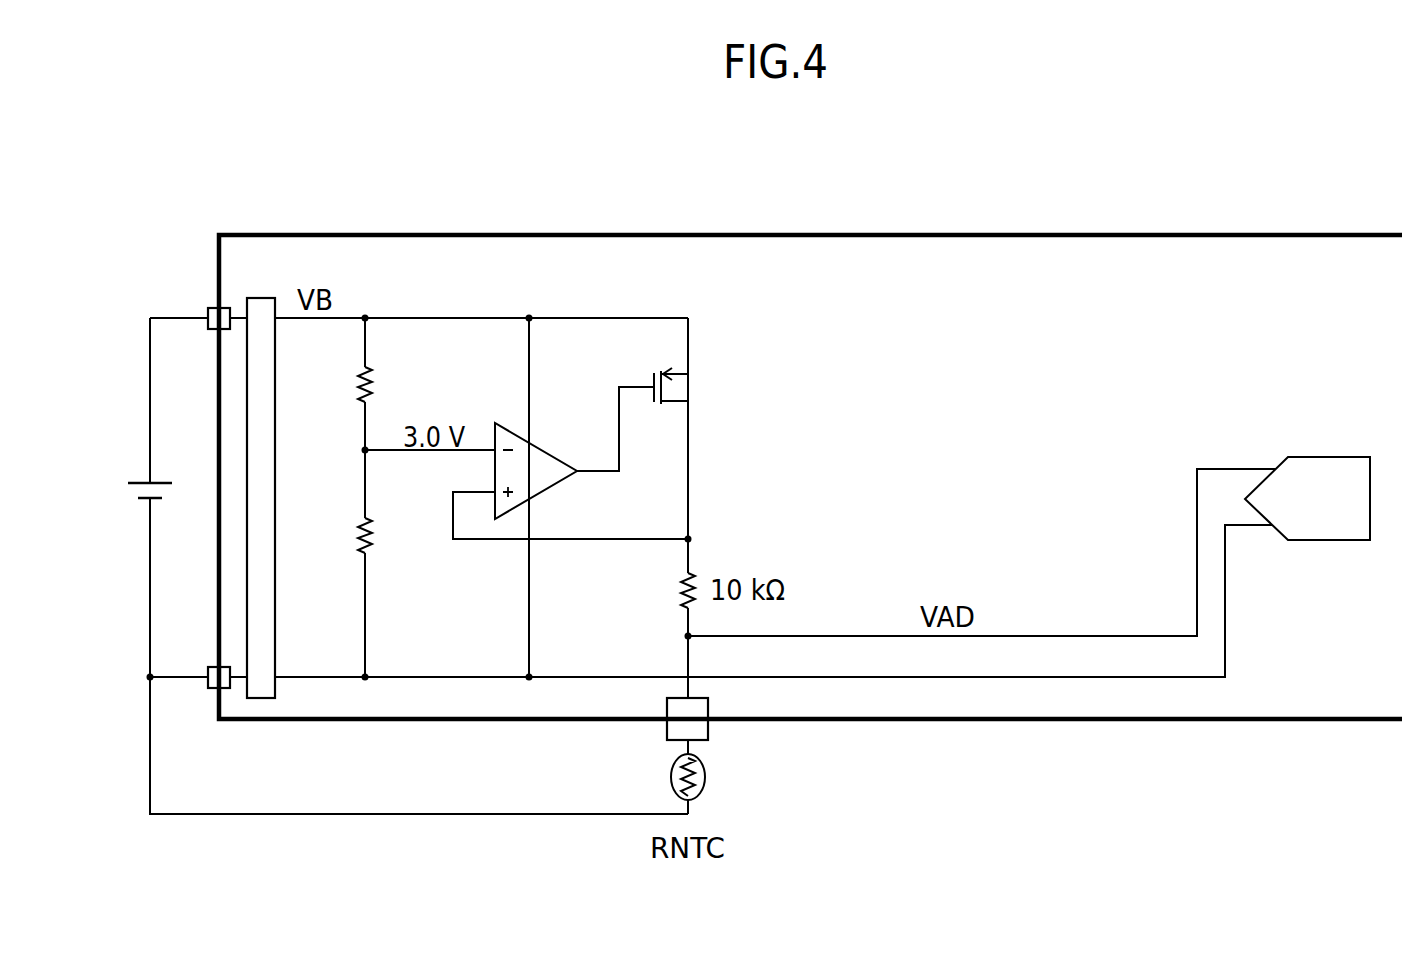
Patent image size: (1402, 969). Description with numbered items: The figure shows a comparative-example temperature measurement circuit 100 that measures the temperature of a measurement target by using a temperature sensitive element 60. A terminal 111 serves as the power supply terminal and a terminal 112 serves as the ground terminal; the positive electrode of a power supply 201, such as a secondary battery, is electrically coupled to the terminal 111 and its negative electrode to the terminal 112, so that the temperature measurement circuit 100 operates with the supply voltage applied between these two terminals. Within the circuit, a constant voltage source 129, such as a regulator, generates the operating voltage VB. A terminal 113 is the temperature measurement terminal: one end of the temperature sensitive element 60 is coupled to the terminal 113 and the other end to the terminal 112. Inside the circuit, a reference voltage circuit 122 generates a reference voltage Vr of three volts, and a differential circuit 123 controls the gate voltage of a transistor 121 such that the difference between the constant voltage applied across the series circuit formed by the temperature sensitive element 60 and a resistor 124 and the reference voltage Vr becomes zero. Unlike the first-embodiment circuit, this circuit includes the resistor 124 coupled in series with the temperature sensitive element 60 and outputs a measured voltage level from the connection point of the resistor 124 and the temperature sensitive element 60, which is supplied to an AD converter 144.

The temperature measurement circuit 100 is at (1280, 235).
The terminal 111 is at (208, 310).
The terminal 112 is at (208, 682).
The terminal 113 is at (710, 730).
The constant voltage source 129 is at (259, 297).
The power supply 201 is at (160, 483).
The reference voltage circuit 122 is at (343, 394).
The transistor 121 is at (654, 378).
The differential circuit 123 is at (553, 457).
The resistor 124 is at (684, 590).
The temperature sensitive element 60 is at (705, 790).
The AD converter 144 is at (1326, 457).